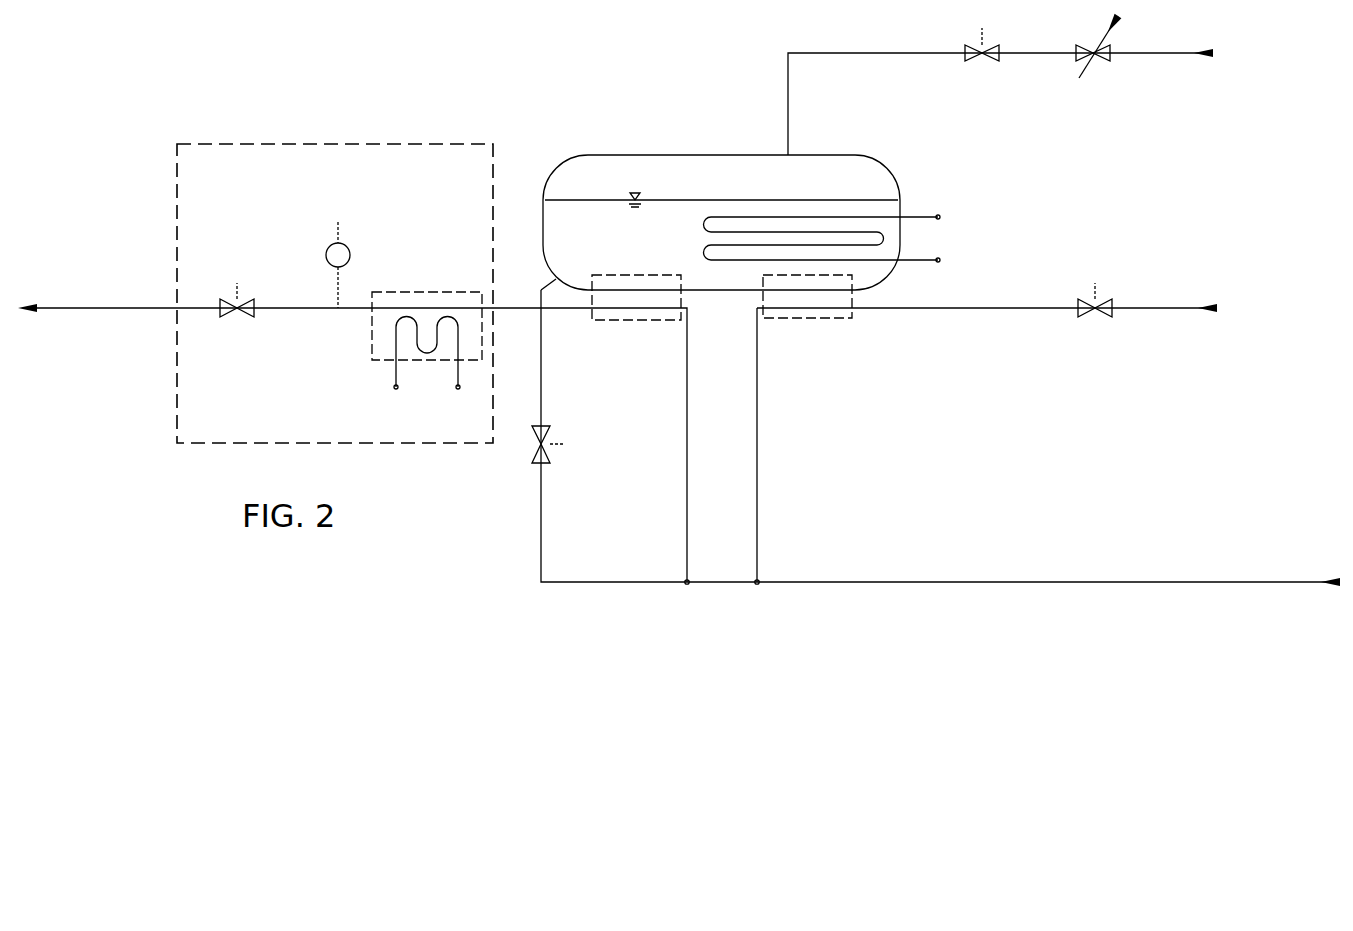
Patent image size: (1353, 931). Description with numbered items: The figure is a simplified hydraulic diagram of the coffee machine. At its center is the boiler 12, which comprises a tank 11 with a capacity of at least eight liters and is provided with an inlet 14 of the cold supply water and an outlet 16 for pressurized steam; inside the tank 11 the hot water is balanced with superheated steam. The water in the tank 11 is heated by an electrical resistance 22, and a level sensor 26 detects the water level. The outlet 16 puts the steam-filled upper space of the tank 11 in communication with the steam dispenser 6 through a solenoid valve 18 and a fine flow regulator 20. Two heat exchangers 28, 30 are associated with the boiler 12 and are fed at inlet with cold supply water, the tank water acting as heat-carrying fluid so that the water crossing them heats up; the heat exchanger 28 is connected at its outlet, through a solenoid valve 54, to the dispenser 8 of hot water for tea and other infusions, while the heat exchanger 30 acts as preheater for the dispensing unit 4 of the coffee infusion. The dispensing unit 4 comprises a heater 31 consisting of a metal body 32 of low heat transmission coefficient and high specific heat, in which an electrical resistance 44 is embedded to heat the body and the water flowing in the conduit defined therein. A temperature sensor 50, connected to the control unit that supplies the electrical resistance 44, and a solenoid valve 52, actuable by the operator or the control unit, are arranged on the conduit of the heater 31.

The dispensing unit 4 is at (352, 143).
The dispenser of pressurized steam 6 is at (1228, 57).
The dispenser of hot water 8 is at (1231, 307).
The tank 11 is at (721, 195).
The boiler 12 is at (673, 152).
The inlet 14 is at (542, 388).
The outlet for pressurized steam 16 is at (792, 123).
The solenoid valve 18 is at (993, 58).
The fine flow regulator 20 is at (1105, 58).
The electrical resistance 22 is at (920, 215).
The level sensor 26 is at (633, 194).
The heat exchanger 28 is at (852, 302).
The heat exchanger 30 is at (593, 300).
The heater 31 is at (398, 294).
The metal body 32 is at (420, 290).
The electrical resistance 44 is at (397, 340).
The temperature sensor 50 is at (332, 245).
The solenoid valve 52 is at (226, 312).
The solenoid valve 54 is at (1108, 303).